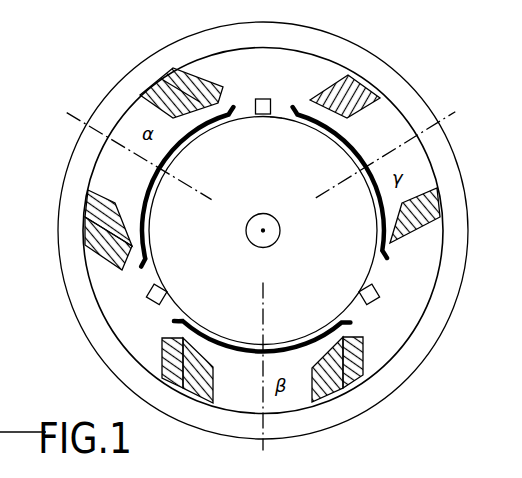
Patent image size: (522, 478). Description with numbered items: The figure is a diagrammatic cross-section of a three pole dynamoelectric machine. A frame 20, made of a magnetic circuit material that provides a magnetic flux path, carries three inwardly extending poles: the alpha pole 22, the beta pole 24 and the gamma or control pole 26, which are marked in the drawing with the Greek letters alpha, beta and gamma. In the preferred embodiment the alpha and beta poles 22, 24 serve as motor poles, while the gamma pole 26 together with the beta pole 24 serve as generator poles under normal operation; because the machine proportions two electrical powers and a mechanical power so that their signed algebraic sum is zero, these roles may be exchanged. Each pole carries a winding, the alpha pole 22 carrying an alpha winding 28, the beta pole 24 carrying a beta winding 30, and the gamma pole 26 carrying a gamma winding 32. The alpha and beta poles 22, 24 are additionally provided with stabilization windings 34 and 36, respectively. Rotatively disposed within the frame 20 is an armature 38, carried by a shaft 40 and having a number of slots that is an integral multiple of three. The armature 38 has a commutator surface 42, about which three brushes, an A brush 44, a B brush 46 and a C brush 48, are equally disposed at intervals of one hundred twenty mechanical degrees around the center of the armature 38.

The frame 20 is at (147, 72).
The alpha pole 22 is at (118, 137).
The beta pole 24 is at (247, 397).
The gamma pole 26 is at (398, 132).
The alpha winding 28 is at (98, 203).
The beta winding 30 is at (327, 392).
The gamma winding 32 is at (363, 92).
The stabilization winding 34 is at (85, 250).
The stabilization winding 36 is at (358, 363).
The armature 38 is at (240, 130).
The shaft 40 is at (272, 217).
The commutator surface 42 is at (282, 118).
The A brush 44 is at (262, 98).
The B brush 46 is at (150, 300).
The C brush 48 is at (376, 298).